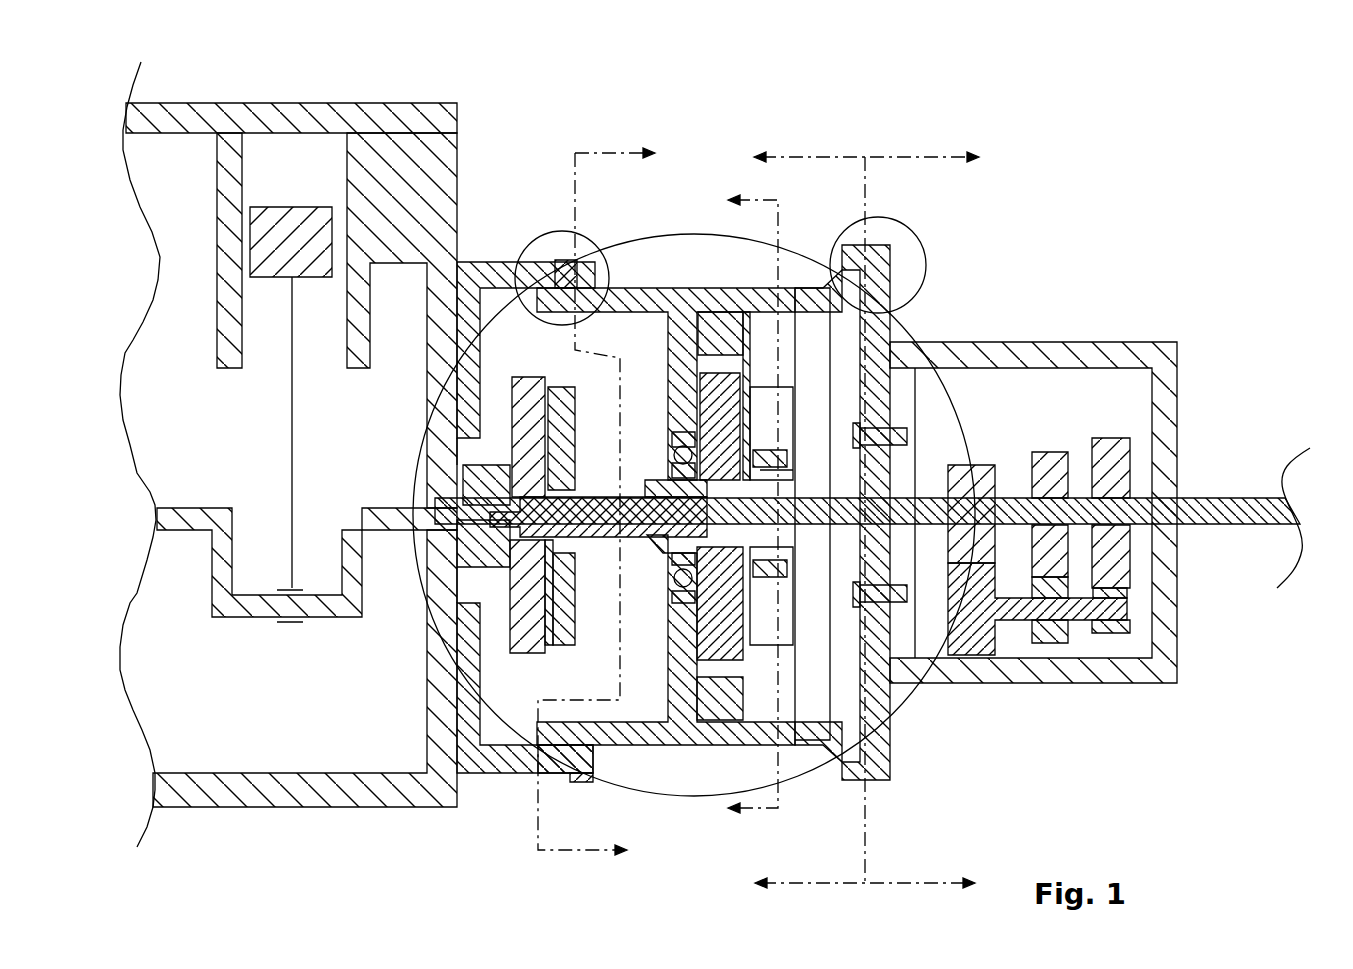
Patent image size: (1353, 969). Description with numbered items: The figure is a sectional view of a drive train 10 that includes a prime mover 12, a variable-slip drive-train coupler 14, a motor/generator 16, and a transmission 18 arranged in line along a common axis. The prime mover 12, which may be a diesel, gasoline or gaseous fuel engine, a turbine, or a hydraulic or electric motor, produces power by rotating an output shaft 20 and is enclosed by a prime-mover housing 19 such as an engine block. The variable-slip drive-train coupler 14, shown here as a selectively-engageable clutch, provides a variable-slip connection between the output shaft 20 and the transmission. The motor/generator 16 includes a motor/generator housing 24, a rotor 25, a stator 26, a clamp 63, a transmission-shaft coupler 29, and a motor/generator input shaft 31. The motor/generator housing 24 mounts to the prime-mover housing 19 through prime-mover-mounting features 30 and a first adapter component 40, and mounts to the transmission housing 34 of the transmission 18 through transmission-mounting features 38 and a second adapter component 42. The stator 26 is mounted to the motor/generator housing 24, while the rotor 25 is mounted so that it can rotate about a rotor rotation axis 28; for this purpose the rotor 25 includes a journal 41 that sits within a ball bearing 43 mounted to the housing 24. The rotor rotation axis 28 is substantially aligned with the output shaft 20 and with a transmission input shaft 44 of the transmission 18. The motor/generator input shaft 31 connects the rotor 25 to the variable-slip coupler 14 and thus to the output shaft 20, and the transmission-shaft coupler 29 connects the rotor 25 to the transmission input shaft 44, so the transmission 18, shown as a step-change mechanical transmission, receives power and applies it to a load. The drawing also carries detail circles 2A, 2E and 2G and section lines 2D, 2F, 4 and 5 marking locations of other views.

The drive train 10 is at (998, 226).
The prime mover 12 is at (484, 111).
The variable-slip drive-train coupler 14 is at (513, 747).
The motor/generator 16 is at (705, 131).
The transmission 18 is at (1100, 307).
The prime-mover housing 19 is at (355, 103).
The output shaft 20 is at (480, 540).
The motor/generator housing 24 is at (640, 733).
The rotor 25 is at (745, 655).
The stator 26 is at (748, 700).
The rotor rotation axis 28 is at (652, 488).
The transmission-shaft coupler 29 is at (752, 467).
The prime-mover-mounting features 30 is at (568, 284).
The motor/generator input shaft 31 is at (602, 498).
The transmission housing 34 is at (1172, 385).
The transmission-mounting features 38 is at (890, 318).
The first adapter component 40 is at (508, 762).
The journal 41 is at (665, 480).
The second adapter component 42 is at (890, 318).
The ball bearing 43 is at (588, 551).
The transmission input shaft 44 is at (835, 688).
The clamp 63 is at (790, 461).
The detail circle 2A is at (694, 522).
The section line 2D is at (596, 501).
The detail circle 2E is at (560, 236).
The section line 2F is at (788, 521).
The detail circle 2G is at (882, 240).
The section line 4 is at (866, 521).
The section line 5 is at (753, 508).